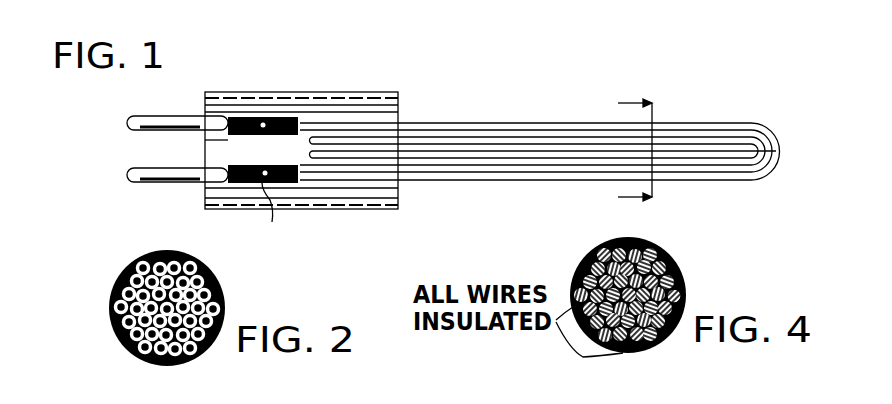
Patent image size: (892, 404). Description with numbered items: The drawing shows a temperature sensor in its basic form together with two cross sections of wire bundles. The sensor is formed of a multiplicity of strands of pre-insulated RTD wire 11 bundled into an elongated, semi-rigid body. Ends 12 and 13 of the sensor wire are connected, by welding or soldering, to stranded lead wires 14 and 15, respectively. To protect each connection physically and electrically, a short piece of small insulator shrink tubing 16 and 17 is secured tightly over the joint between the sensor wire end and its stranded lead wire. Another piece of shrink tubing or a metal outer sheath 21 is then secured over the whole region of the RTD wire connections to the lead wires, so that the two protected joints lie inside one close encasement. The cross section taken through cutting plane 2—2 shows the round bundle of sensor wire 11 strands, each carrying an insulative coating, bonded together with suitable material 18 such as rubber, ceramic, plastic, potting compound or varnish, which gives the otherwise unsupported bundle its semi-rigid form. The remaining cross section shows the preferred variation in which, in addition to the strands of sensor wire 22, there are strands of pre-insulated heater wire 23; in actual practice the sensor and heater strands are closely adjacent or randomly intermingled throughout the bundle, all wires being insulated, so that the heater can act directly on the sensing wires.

In FIG. 1, the cutting plane 2— 2 is at (625, 150).
In FIG. 1, the pre-insulated RTD wire 11 is at (730, 123).
In FIG. 2, the pre-insulated RTD wire 11 is at (128, 266).
In FIG. 1, the end of sensor wire 12 is at (282, 183).
In FIG. 1, the end of sensor wire 13 is at (265, 123).
In FIG. 1, the stranded lead wire 14 is at (150, 182).
In FIG. 1, the stranded lead wire 15 is at (150, 117).
In FIG. 1, the insulator shrink tubing 16 is at (272, 222).
In FIG. 1, the insulator shrink tubing 17 is at (245, 136).
In FIG. 2, the bonding material 18 is at (127, 348).
In FIG. 4, the bonding material 18 is at (594, 248).
In FIG. 1, the outer sheath 21 is at (342, 93).
In FIG. 4, the sensor wire 22 is at (652, 240).
In FIG. 4, the pre-insulated heater wire 23 is at (677, 257).